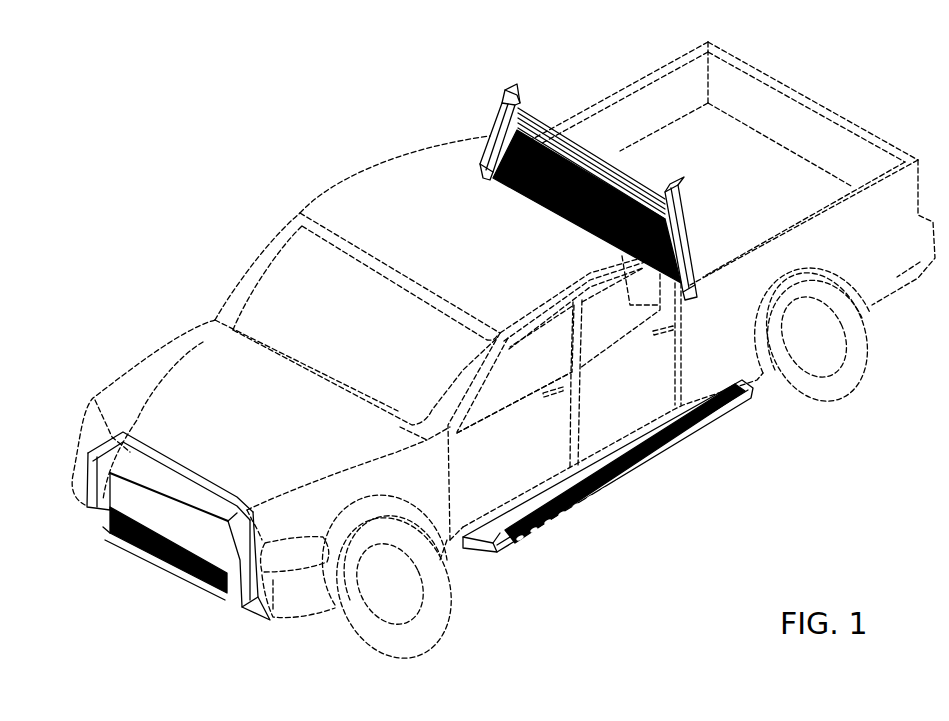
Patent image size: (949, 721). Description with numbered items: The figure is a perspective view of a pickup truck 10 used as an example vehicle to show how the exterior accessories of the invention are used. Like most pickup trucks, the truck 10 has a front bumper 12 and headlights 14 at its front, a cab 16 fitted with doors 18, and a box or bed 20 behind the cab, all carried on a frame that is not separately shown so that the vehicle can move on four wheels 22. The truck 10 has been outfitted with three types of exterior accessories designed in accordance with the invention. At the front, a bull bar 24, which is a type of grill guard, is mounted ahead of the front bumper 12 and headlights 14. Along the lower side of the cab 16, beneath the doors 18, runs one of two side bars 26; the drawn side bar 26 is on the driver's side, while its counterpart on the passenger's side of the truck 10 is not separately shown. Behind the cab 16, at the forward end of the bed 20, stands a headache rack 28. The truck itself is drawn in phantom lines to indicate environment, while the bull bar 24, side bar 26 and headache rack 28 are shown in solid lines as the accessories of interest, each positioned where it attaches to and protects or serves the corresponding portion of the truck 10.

The pickup truck 10 is at (398, 184).
The front bumper 12 is at (300, 590).
The headlights 14 is at (290, 557).
The cab 16 is at (430, 162).
The doors 18 is at (517, 470).
The box or bed 20 is at (778, 172).
The wheels 22 is at (405, 572).
The bull bar 24 is at (190, 492).
The side bars 26 is at (658, 458).
The headache rack 28 is at (543, 123).